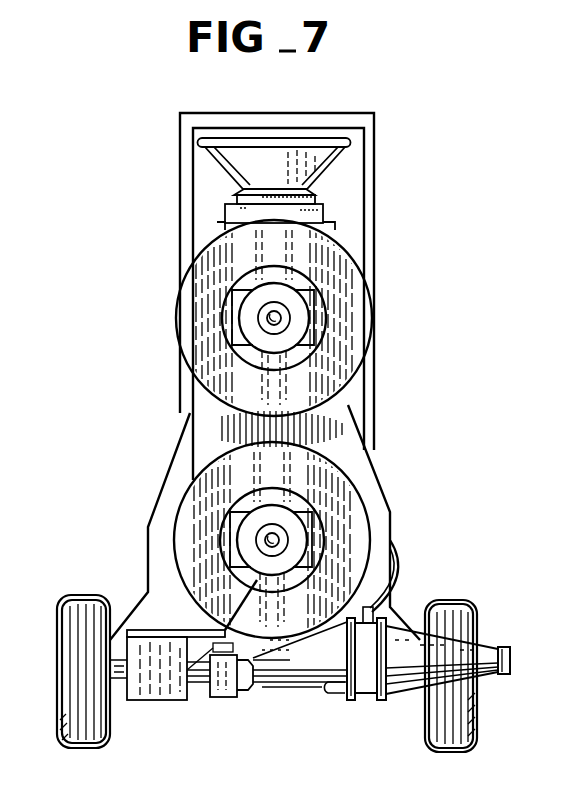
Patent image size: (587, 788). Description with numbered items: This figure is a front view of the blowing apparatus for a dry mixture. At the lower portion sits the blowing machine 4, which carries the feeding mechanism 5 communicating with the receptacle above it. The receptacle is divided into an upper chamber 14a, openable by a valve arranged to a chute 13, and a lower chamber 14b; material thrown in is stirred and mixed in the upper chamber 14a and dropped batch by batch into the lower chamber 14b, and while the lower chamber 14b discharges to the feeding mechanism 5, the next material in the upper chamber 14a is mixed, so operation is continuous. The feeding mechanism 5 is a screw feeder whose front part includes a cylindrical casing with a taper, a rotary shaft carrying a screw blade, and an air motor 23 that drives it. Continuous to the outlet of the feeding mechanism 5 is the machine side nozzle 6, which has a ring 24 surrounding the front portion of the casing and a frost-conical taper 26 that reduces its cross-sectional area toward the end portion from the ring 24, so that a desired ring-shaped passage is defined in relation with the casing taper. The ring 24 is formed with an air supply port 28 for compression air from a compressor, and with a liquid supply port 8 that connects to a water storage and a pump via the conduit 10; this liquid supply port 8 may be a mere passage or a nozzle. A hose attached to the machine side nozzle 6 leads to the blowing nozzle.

The blowing machine 4 is at (381, 461).
The feeding mechanism 5 is at (272, 687).
The machine side nozzle 6 is at (398, 690).
The liquid supply port 8 is at (342, 696).
The conduit 10 is at (325, 688).
The chute 13 is at (210, 427).
The upper chamber 14a is at (358, 333).
The lower chamber 14b is at (183, 525).
The air motor 23 is at (217, 698).
The ring 24 is at (365, 695).
The frost-conical taper 26 is at (481, 652).
The air supply port 28 is at (384, 612).